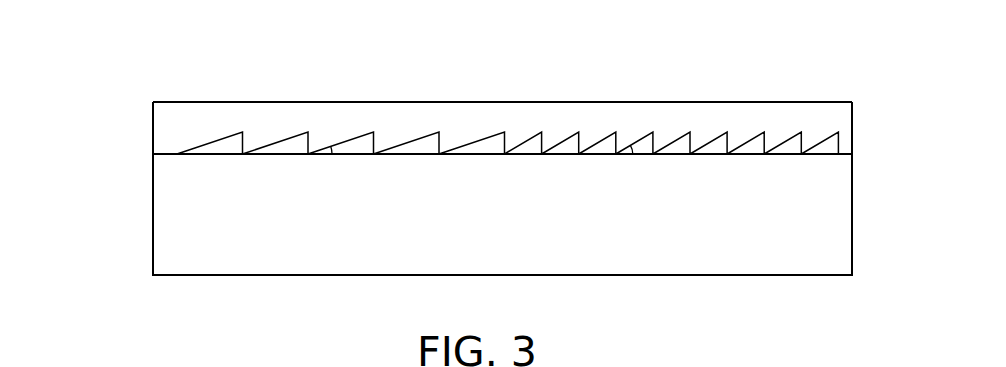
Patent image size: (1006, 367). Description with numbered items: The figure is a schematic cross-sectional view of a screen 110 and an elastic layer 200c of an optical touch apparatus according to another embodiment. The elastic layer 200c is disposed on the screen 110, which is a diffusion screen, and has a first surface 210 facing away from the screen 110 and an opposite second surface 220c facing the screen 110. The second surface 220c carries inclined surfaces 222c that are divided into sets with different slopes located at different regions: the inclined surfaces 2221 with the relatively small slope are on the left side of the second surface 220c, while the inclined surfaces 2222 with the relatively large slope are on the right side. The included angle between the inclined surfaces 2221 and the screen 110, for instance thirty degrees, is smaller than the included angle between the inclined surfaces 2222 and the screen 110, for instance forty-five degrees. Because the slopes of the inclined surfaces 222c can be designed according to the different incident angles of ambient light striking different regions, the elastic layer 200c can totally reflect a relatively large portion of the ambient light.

The screen 110 is at (828, 230).
The elastic layer 200c is at (840, 123).
The first surface 210 is at (805, 100).
The second surface 220c is at (504, 230).
The inclined surfaces 222c is at (504, 175).
The inclined surfaces 2221 is at (266, 148).
The inclined surfaces 2222 is at (746, 148).